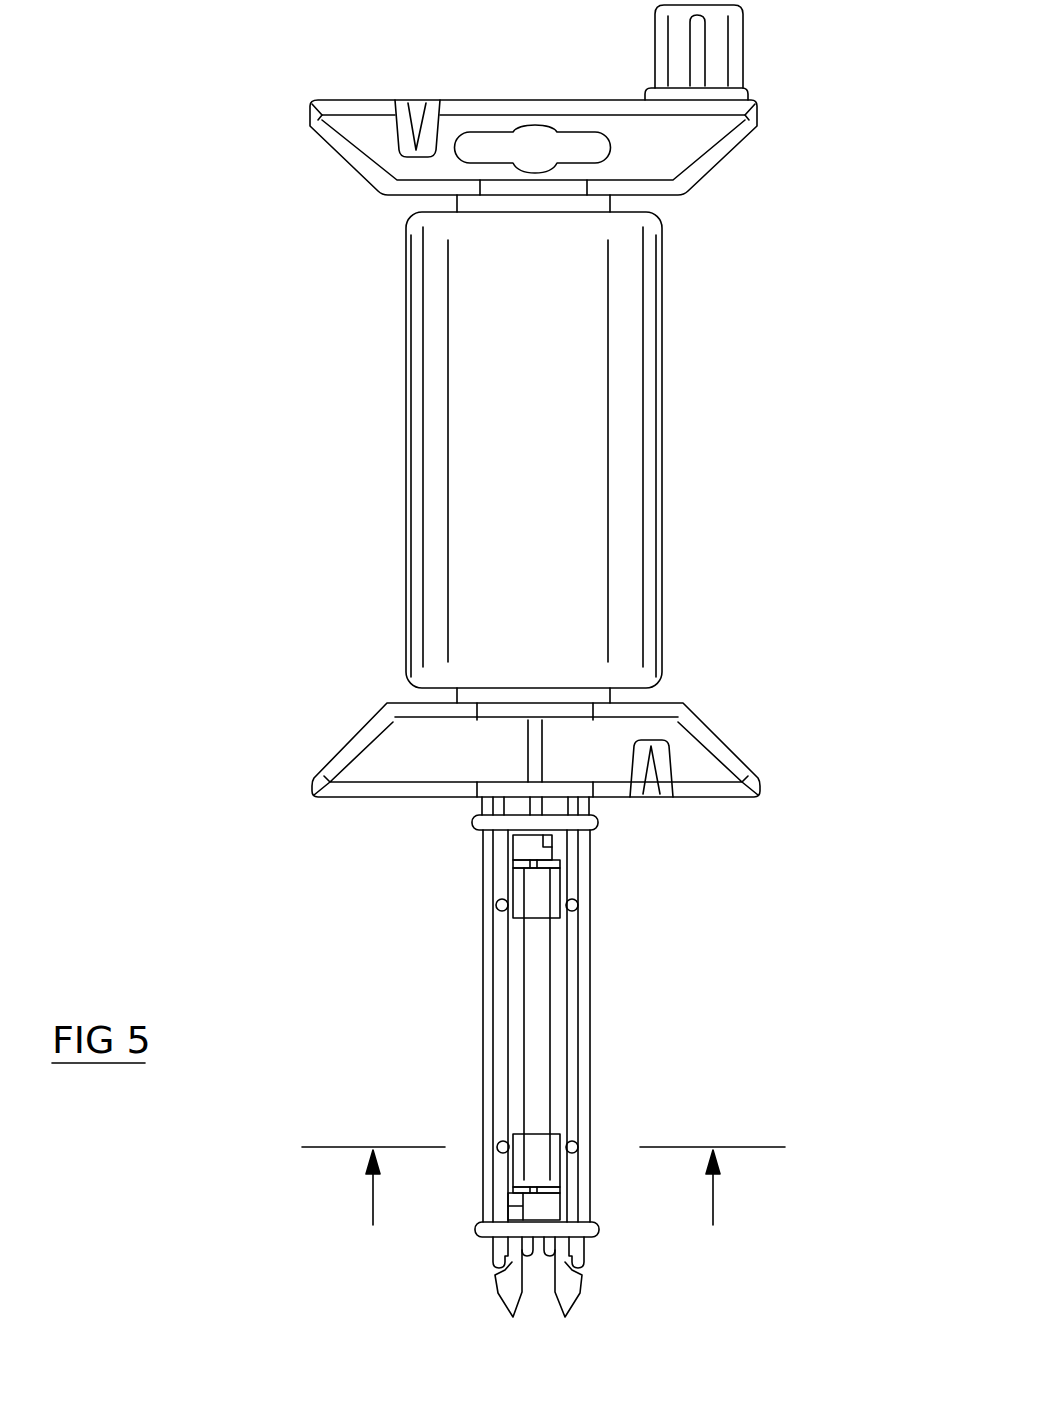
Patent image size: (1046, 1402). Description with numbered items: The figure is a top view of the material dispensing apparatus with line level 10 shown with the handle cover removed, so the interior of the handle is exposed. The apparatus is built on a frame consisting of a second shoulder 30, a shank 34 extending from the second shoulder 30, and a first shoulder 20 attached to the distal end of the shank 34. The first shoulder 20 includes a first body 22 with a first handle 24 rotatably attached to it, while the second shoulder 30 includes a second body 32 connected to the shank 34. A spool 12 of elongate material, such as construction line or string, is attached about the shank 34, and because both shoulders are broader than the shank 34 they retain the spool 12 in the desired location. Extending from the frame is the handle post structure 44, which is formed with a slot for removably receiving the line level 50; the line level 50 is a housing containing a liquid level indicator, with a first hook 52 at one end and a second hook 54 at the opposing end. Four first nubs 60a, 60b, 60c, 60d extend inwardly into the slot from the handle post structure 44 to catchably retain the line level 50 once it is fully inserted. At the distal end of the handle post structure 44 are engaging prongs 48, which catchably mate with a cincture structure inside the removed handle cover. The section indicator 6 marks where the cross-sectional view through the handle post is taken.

The material dispensing apparatus with line level 10 is at (215, 150).
The spool 12 is at (480, 465).
The first shoulder 20 is at (333, 177).
The first body 22 is at (662, 162).
The first handle 24 is at (692, 53).
The second shoulder 30 is at (730, 722).
The second body 32 is at (395, 752).
The shank 34 is at (587, 697).
The handle post structure 44 is at (573, 1010).
The engaging prongs 48 is at (568, 1293).
The line level 50 is at (540, 1022).
The first hook 52 is at (545, 845).
The second hook 54 is at (527, 1207).
The first nub 60a is at (496, 905).
The first nub 60b is at (578, 905).
The first nub 60c is at (498, 1141).
The first nub 60d is at (578, 1147).
The section line 6- 6 is at (543, 1209).